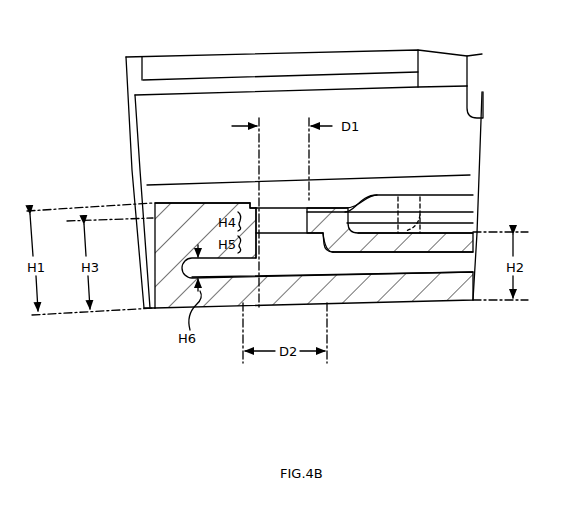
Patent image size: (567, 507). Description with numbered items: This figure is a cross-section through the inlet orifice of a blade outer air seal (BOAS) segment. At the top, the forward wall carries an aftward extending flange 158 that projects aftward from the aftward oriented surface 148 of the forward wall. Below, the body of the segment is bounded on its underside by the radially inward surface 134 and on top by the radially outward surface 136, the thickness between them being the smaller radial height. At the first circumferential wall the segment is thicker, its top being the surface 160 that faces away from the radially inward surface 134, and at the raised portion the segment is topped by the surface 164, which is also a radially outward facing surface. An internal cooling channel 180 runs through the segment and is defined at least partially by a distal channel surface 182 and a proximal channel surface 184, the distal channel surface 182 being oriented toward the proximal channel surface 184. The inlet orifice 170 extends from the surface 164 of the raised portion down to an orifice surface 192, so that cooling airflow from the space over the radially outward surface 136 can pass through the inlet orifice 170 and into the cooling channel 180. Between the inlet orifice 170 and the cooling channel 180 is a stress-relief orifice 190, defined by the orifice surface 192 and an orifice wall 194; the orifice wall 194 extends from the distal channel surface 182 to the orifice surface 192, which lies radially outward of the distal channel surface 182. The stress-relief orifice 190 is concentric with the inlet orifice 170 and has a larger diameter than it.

The aftward extending flange 158 is at (255, 67).
The aftward oriented surface 148 is at (304, 182).
The surface of first circumferential wall 160 is at (193, 203).
The surface of raised portion 164 is at (253, 206).
The inlet orifice 170 is at (286, 205).
The stress-relief orifice 190 is at (318, 226).
The radially outward surface 136 is at (396, 232).
The proximal channel surface 184 is at (417, 270).
The cooling channel 180 is at (441, 260).
The orifice surface 192 is at (254, 234).
The orifice wall 194 is at (323, 233).
The distal channel surface 182 is at (375, 254).
The radially inward surface 134 is at (415, 301).